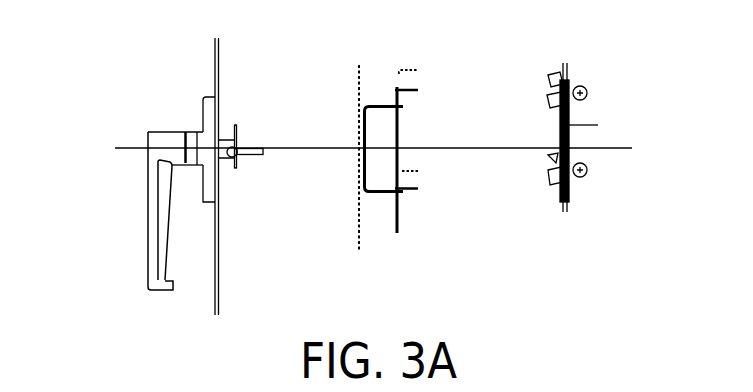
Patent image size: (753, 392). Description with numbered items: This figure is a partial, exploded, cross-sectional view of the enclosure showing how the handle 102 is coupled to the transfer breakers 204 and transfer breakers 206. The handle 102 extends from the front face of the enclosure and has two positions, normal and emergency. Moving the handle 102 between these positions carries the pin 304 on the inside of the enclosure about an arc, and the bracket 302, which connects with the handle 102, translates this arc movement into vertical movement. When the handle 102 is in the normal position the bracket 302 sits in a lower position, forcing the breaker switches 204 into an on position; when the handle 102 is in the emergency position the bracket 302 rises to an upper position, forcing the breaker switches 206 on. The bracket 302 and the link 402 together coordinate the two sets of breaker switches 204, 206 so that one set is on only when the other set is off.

The handle 102 is at (147, 218).
The pin 304 is at (245, 156).
The bracket 302 is at (375, 198).
The link 402 is at (567, 112).
The transfer breakers 204 is at (573, 83).
The transfer breakers 206 is at (573, 183).